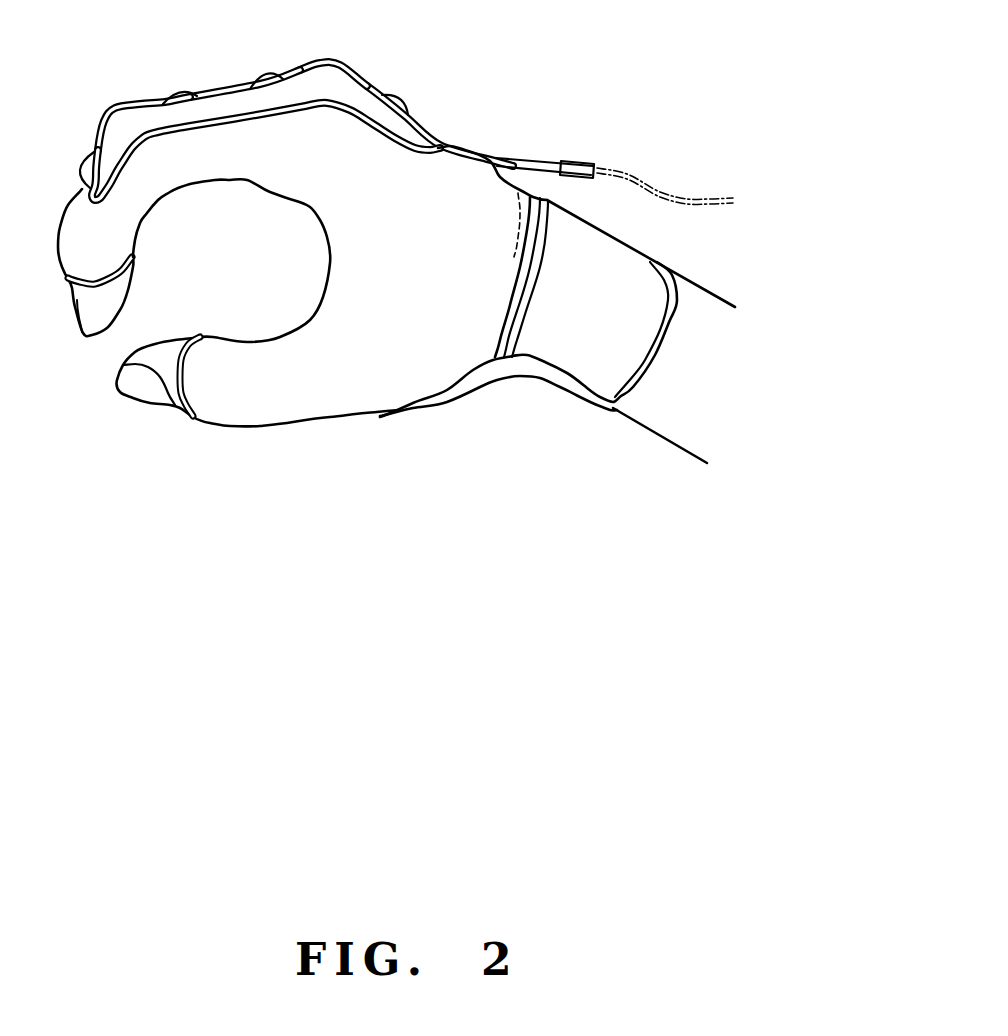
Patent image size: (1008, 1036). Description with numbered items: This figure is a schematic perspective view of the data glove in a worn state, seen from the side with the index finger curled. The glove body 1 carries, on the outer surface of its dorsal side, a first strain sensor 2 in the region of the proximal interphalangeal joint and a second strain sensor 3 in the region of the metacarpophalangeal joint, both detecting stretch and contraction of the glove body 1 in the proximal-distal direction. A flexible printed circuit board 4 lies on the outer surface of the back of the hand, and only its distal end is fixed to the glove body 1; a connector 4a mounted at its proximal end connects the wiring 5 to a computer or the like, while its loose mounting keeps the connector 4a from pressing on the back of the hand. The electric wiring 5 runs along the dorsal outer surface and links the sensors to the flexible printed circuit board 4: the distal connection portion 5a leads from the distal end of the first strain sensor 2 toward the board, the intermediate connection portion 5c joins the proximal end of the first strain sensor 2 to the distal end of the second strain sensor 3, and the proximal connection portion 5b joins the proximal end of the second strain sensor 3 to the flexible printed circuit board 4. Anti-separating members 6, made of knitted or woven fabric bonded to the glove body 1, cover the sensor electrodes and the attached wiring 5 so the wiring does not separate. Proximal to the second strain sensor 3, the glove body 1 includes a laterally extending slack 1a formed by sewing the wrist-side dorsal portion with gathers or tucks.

The glove body 1 is at (580, 400).
The slack 1a is at (550, 193).
The first strain sensor 2 is at (111, 102).
The second strain sensor 3 is at (337, 60).
The flexible printed circuit board 4 is at (540, 160).
The connector 4a is at (577, 161).
The electric wiring 5 is at (307, 101).
The distal connection portion 5a is at (147, 131).
The proximal connection portion 5b is at (437, 130).
The intermediate connection portion 5c is at (218, 89).
The anti-separating member 6 is at (180, 93).